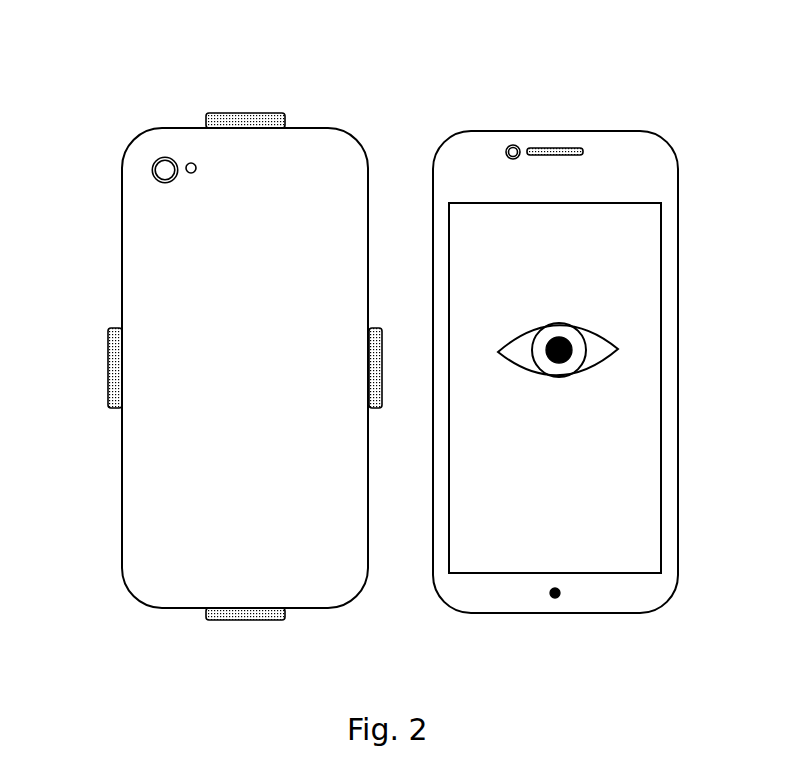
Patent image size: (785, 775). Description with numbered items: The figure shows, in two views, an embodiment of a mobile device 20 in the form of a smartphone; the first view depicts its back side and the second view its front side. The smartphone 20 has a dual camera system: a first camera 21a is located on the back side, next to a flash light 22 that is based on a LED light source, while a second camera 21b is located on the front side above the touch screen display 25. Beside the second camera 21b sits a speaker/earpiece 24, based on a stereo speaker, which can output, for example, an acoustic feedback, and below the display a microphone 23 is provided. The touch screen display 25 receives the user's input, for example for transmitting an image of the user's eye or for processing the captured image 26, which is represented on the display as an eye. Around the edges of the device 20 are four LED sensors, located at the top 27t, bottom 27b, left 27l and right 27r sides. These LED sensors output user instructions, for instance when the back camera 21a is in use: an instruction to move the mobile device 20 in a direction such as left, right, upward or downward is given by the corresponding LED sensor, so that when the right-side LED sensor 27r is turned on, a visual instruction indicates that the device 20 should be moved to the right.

The mobile device 20 is at (122, 488).
The first camera 21a is at (152, 172).
The flash light 22 is at (191, 163).
The LED sensor at top side 27t is at (250, 113).
The LED sensor at bottom side 27b is at (243, 620).
The LED sensor at left side 27l is at (108, 365).
The LED sensor at right side 27r is at (377, 408).
The second camera 21b is at (513, 145).
The speaker/earpiece 24 is at (555, 148).
The touch screen display 25 is at (661, 387).
The captured image 26 is at (618, 349).
The microphone 23 is at (555, 598).